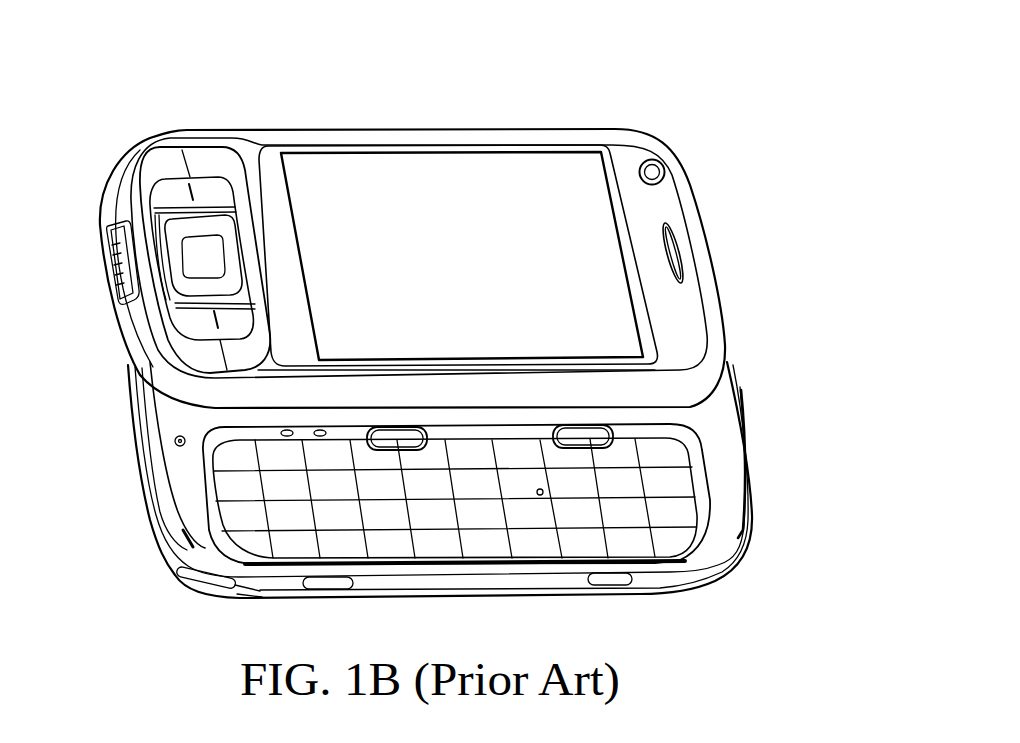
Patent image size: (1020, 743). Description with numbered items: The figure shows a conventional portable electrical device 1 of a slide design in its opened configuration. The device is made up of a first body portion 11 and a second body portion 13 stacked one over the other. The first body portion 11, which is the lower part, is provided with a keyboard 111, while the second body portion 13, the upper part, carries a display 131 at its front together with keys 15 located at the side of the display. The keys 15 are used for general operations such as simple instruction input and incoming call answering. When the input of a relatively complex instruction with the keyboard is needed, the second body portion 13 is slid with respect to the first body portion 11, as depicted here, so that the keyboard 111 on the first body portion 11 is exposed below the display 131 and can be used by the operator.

The portable electrical device 1 is at (708, 145).
The first body portion 11 is at (718, 583).
The keyboard 111 is at (680, 480).
The second body portion 13 is at (708, 237).
The display 131 is at (490, 183).
The keys 15 is at (173, 230).